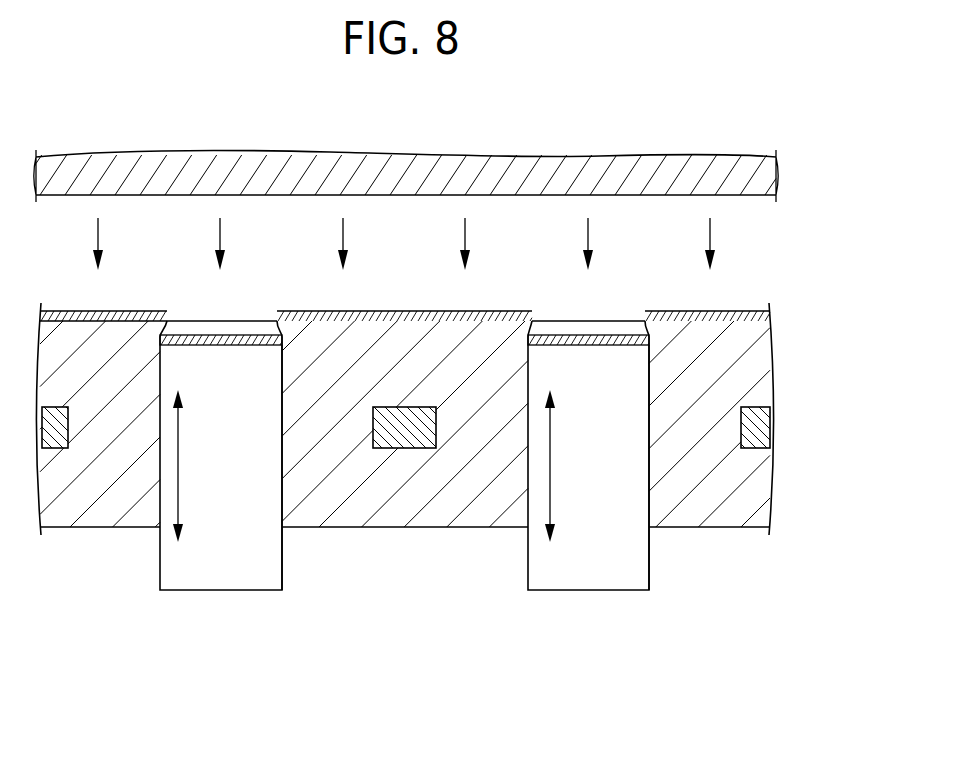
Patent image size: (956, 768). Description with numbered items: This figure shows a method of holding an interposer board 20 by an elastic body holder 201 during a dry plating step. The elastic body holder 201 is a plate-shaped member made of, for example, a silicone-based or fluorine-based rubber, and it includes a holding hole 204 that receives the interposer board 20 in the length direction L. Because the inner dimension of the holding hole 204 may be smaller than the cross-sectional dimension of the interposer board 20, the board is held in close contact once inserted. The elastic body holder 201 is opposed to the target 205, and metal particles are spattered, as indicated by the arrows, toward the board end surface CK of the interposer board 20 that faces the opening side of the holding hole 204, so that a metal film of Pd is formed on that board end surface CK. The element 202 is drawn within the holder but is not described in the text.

The interposer board 20 is at (203, 608).
The elastic body holder 201 is at (788, 377).
The wiring / embedded conductor 202 is at (398, 438).
The holding hole 204 is at (282, 490).
The target 205 is at (737, 197).
The board end surface CK is at (202, 340).
The length direction L is at (376, 466).